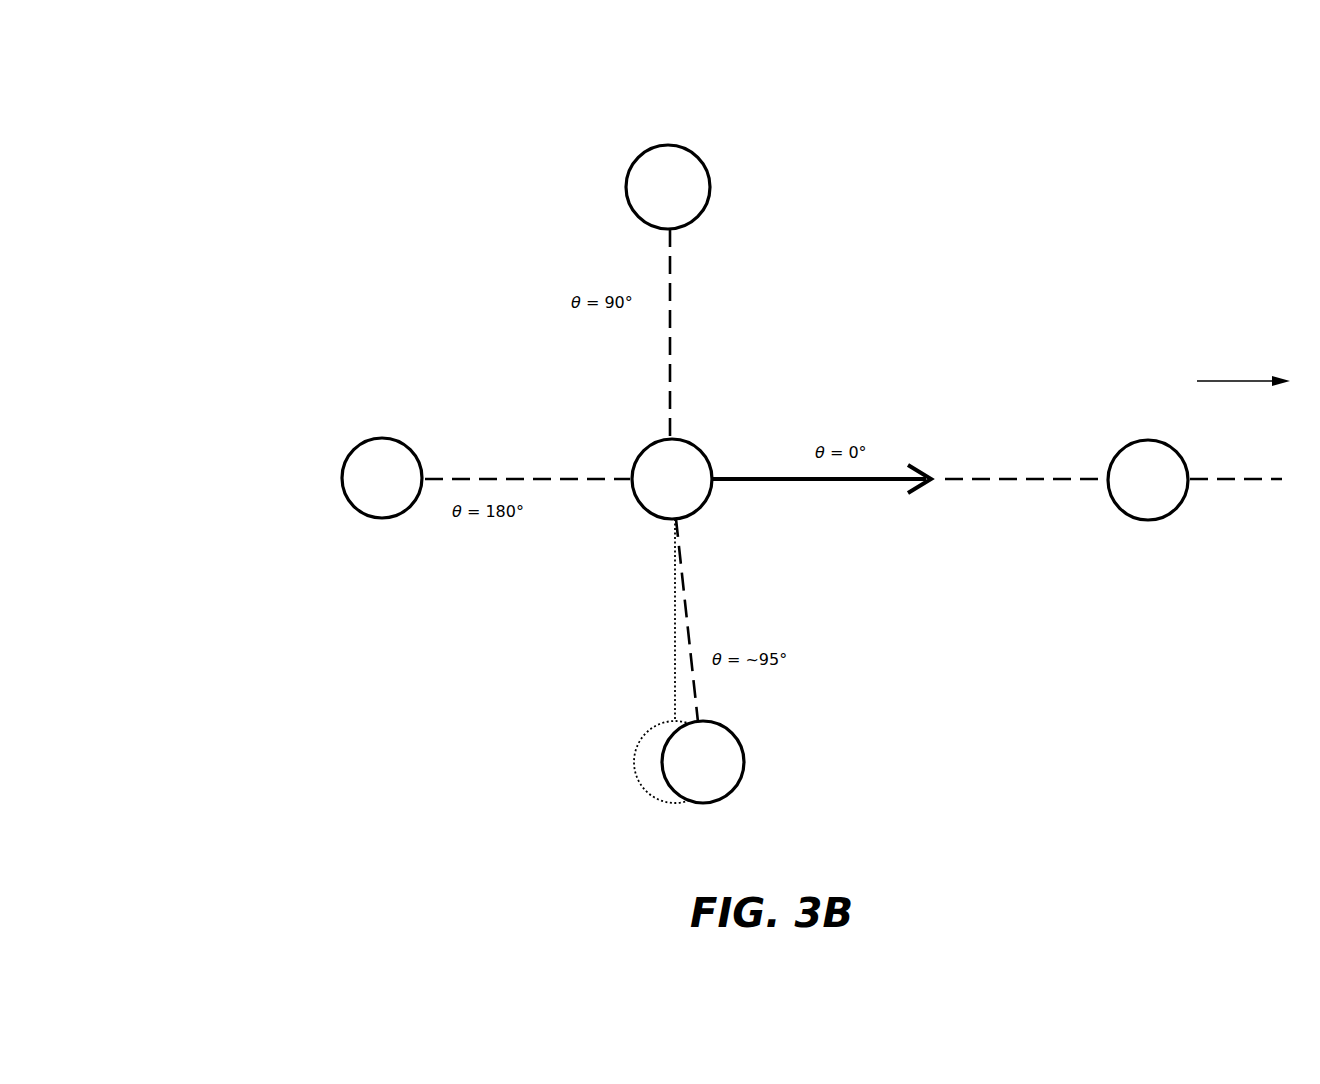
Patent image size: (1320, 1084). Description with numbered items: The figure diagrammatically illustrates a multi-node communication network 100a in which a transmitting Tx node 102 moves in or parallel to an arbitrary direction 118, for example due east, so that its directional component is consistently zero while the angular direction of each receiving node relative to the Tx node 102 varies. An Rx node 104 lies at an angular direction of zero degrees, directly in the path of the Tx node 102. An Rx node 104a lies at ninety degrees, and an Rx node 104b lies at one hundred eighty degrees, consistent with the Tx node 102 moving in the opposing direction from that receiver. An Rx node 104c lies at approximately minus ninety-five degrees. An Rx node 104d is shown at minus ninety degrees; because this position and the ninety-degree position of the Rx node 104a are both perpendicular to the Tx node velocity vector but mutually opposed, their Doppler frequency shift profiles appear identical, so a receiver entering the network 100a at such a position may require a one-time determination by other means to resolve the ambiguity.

The multi-node communication network 100a is at (182, 153).
The Tx node 102 is at (694, 453).
The Rx node 104 is at (1148, 512).
The Rx node 104a is at (702, 181).
The Rx node 104b is at (349, 467).
The Rx node 104c is at (738, 754).
The Rx node 104d is at (645, 766).
The arbitrary direction 118 is at (1001, 431).